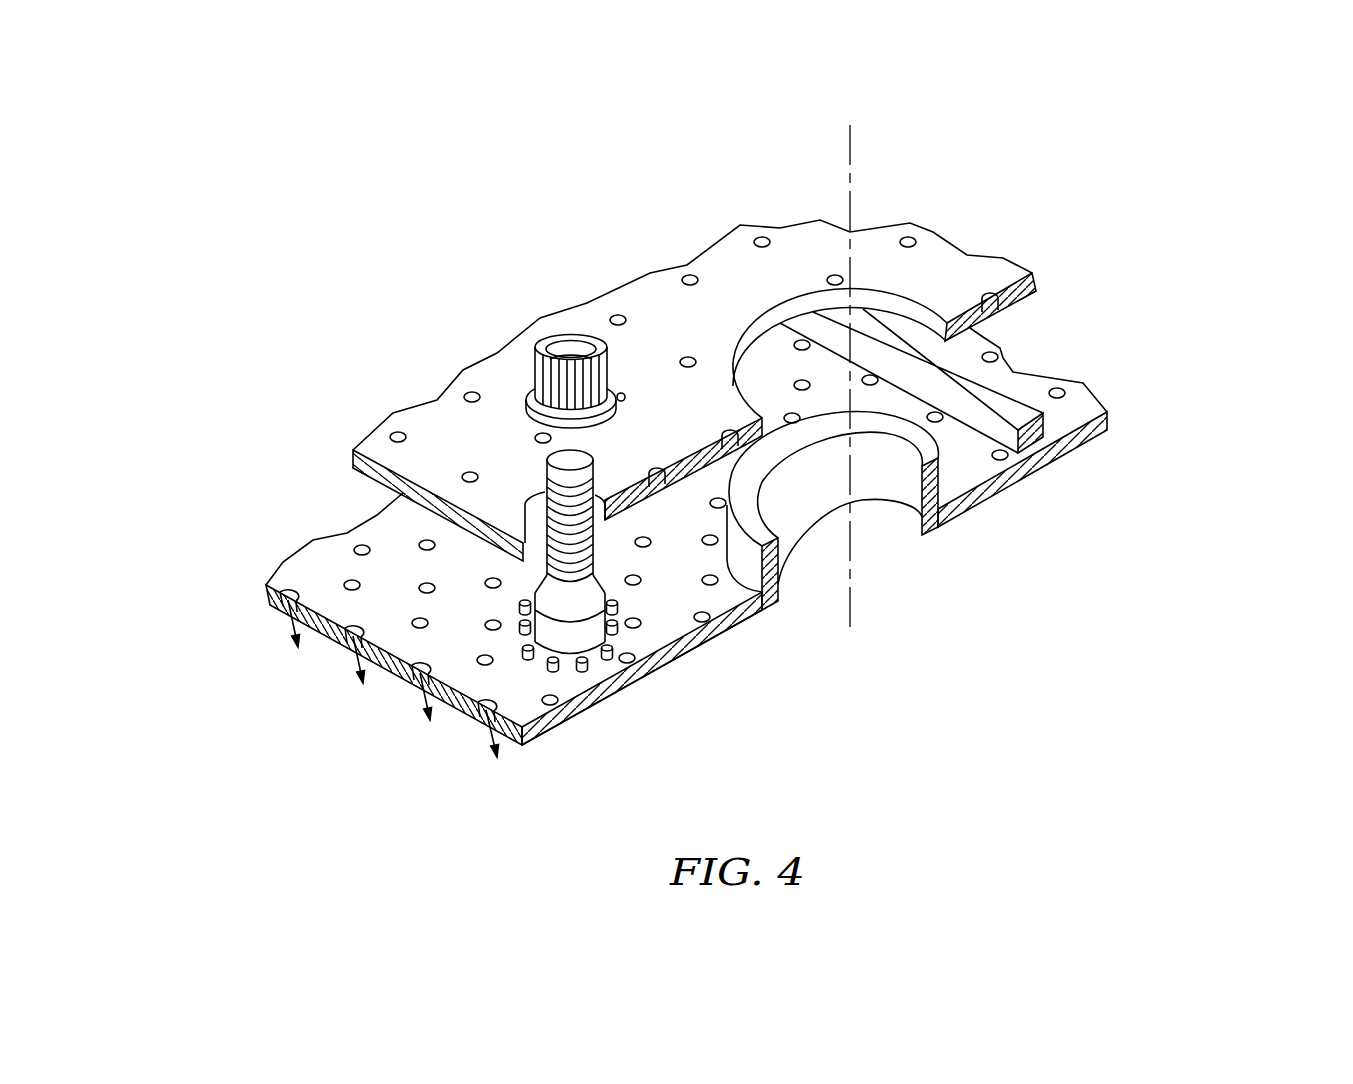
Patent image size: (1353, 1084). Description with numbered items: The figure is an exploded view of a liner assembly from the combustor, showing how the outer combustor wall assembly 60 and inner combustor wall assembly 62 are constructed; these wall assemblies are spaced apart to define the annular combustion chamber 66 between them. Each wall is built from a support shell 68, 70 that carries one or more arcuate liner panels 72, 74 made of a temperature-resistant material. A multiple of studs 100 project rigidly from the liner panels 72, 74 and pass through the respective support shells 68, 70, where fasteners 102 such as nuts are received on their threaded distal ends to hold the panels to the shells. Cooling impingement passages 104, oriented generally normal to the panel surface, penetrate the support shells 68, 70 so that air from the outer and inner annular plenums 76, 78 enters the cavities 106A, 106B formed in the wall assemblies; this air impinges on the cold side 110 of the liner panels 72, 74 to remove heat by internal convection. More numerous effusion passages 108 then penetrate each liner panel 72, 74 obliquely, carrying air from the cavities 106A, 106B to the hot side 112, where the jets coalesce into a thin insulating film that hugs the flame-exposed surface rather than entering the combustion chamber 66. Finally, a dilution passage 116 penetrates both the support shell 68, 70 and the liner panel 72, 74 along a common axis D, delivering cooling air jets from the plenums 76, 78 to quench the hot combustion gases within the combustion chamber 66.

The outer combustor wall assembly 60 is at (700, 450).
The inner combustor wall assembly 62 is at (700, 450).
The combustion chamber 66 is at (993, 681).
The outer support shell 68 is at (728, 343).
The inner support shell 70 is at (1003, 223).
The liner panel 72 is at (675, 544).
The liner panel 74 is at (1143, 397).
The outer annular plenum 76 is at (435, 348).
The inner annular plenum 78 is at (480, 293).
The stud 100 is at (561, 474).
The fastener 102 is at (580, 336).
The cooling impingement passage 104 is at (690, 275).
The cavity 106A is at (297, 607).
The cavity 106B is at (318, 510).
The effusion passage 108 is at (1058, 388).
The cold side 110 is at (657, 637).
The hot side 112 is at (627, 683).
The dilution passage 116 is at (868, 527).
The common axis D is at (853, 163).